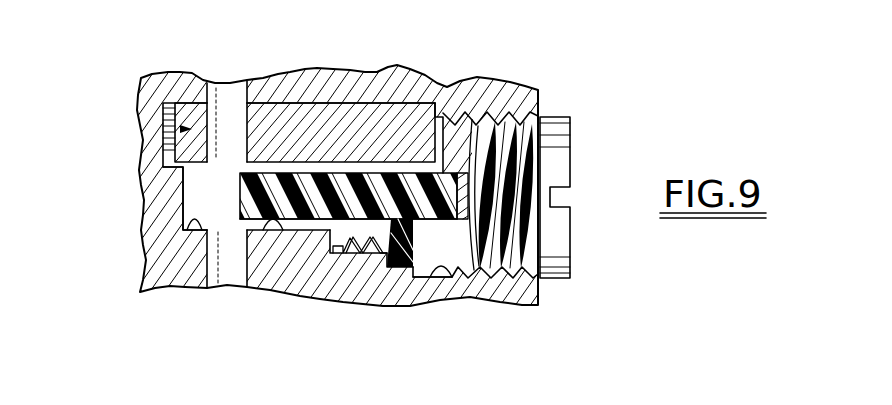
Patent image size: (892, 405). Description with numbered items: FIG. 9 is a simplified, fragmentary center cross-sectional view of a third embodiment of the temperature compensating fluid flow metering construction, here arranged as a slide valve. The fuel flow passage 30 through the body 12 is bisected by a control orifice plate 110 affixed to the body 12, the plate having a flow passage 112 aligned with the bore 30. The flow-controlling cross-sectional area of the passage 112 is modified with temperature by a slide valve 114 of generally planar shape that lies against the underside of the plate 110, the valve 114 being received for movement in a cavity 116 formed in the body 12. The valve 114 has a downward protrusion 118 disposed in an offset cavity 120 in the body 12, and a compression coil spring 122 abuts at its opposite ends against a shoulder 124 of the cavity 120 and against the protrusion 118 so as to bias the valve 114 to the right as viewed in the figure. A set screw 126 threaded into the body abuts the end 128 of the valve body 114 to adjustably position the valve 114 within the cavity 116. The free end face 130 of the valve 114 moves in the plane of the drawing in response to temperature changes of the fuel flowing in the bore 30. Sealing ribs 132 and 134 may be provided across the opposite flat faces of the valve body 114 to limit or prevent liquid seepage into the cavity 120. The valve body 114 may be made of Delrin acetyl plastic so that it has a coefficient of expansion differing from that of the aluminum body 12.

The body 12 is at (340, 70).
The fuel flow passage 30 is at (215, 91).
The control orifice plate 110 is at (160, 123).
The flow passage 112 is at (245, 118).
The slide valve 114 is at (314, 228).
The cavity 116 is at (176, 272).
The downward protrusion 118 is at (411, 268).
The offset cavity 120 is at (454, 283).
The compression coil spring 122 is at (366, 255).
The shoulder 124 is at (334, 256).
The set screw 126 is at (572, 142).
The end of valve body 128 is at (475, 122).
The free end face 130 is at (240, 200).
The sealing rib 132 is at (356, 103).
The sealing rib 134 is at (262, 262).